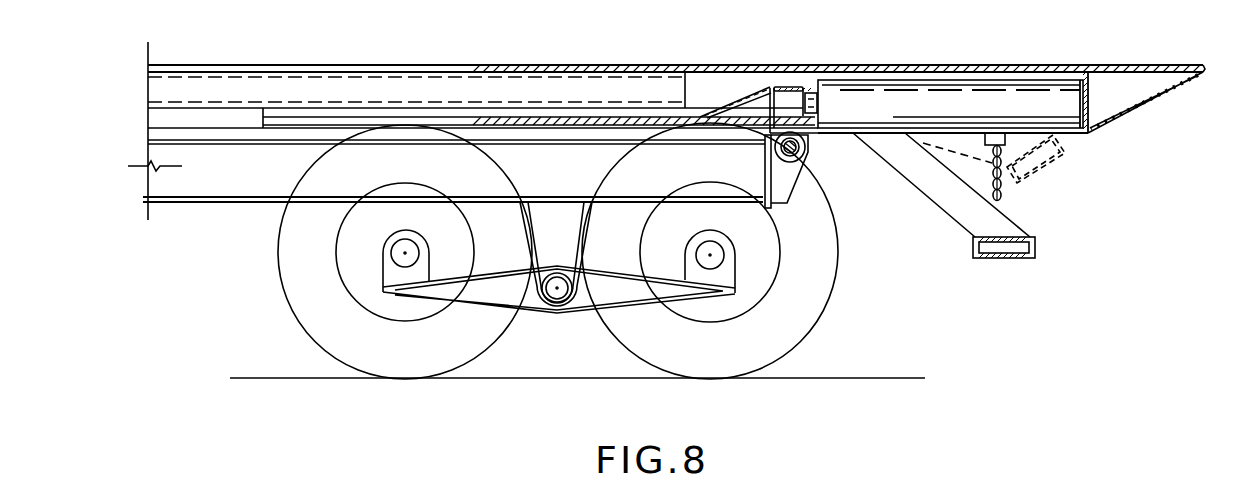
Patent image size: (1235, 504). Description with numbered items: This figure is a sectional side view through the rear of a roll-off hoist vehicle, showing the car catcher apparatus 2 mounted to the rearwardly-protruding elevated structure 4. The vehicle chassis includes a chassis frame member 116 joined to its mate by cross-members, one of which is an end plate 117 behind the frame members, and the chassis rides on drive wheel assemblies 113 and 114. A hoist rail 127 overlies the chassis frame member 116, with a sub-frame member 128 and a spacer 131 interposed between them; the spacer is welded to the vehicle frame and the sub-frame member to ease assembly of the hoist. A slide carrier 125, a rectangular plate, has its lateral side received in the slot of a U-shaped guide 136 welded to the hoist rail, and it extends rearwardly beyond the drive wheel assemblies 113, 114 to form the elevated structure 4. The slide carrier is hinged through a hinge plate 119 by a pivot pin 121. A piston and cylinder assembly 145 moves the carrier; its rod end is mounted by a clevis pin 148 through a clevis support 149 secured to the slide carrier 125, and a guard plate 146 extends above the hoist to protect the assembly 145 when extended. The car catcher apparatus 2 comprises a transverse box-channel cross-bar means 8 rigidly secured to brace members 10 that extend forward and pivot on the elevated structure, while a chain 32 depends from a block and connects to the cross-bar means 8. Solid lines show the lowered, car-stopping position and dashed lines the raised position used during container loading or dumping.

The car catcher apparatus 2 is at (959, 224).
The elevated structure 4 is at (899, 58).
The cross-bar means 8 is at (1010, 250).
The brace members 10 is at (942, 202).
The chain 32 is at (1000, 193).
The drive wheel assembly 113 is at (340, 362).
The drive wheel assembly 114 is at (645, 363).
The chassis frame member 116 is at (223, 183).
The end plate 117 is at (763, 172).
The hinge plate 119 is at (783, 185).
The pivot pin 121 is at (800, 148).
The slide carrier 125 is at (625, 118).
The hoist rail 127 is at (323, 63).
The sub-frame member 128 is at (477, 133).
The spacer 131 is at (432, 146).
The guide 136 is at (328, 128).
The piston and cylinder assembly 145 is at (1055, 100).
The guard plate 146 is at (960, 67).
The clevis pin 148 is at (793, 84).
The clevis support 149 is at (740, 95).